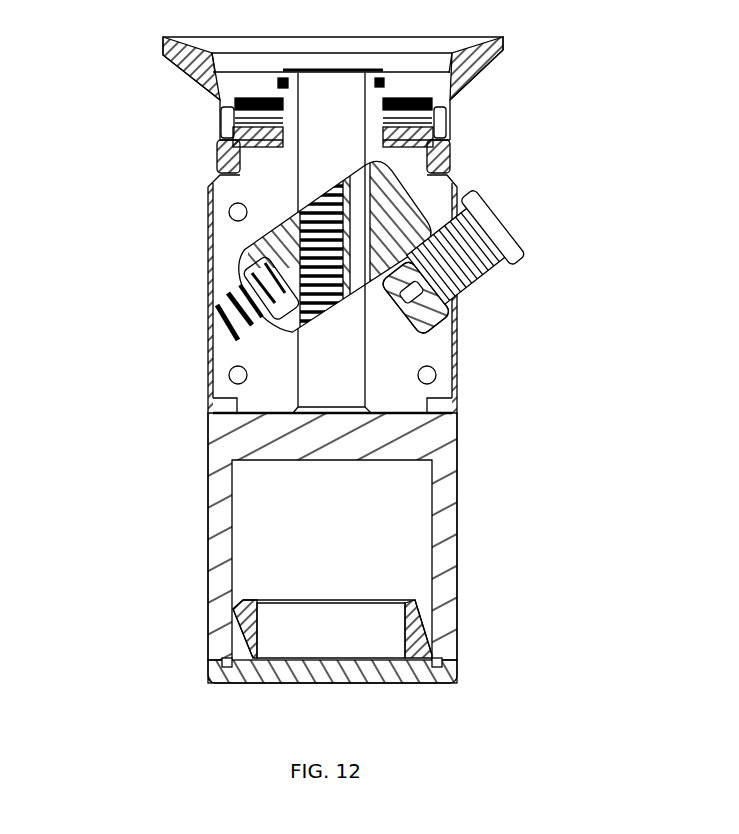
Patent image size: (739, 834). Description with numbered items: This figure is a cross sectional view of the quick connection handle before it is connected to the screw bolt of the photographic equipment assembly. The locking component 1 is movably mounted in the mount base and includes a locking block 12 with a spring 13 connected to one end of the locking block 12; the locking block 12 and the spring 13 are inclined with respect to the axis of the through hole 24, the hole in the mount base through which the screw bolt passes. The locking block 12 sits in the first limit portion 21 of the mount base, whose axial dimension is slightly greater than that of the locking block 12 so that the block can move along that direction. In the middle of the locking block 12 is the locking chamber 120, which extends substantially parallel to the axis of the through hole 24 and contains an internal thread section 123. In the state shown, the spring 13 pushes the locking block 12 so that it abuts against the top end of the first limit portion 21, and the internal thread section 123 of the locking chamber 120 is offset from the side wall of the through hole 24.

The locking component 1 is at (538, 223).
The locking block 12 is at (423, 203).
The locking chamber 120 is at (440, 310).
The internal thread section 123 is at (302, 253).
The spring 13 is at (222, 323).
The first limit portion 21 is at (293, 323).
The through hole 24 is at (448, 123).